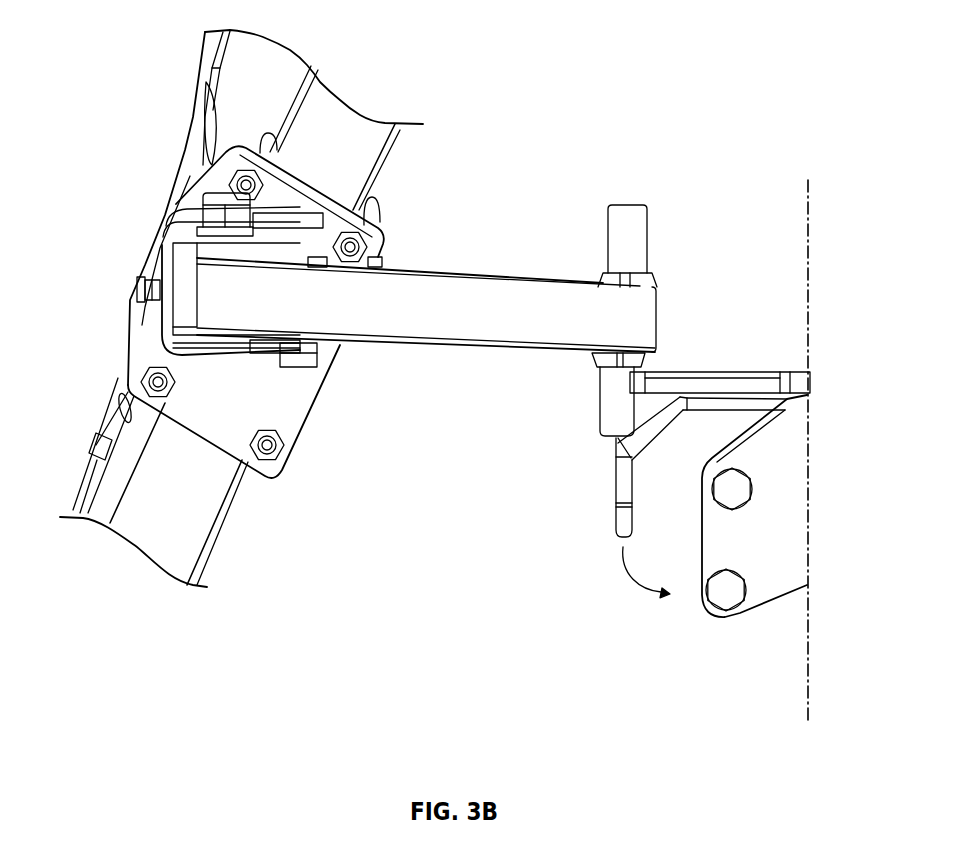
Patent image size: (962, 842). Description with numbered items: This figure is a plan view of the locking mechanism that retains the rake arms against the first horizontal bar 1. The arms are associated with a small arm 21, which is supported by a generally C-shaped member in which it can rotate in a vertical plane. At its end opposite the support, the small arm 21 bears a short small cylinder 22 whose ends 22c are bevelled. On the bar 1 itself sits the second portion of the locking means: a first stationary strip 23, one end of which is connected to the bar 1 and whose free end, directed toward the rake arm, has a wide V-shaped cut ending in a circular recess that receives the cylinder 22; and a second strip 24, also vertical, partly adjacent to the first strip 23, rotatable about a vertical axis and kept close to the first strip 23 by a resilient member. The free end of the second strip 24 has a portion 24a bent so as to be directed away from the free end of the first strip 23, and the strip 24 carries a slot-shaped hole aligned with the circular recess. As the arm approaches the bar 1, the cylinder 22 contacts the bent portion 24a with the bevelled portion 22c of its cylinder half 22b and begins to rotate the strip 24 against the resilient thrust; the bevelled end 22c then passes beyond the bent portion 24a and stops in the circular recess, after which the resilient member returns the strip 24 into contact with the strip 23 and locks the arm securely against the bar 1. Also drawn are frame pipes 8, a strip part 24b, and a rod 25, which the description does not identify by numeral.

The first horizontal bar 1 is at (807, 670).
The frame pipe 8 is at (353, 167).
The small arm 21 is at (455, 287).
The short small cylinder 22 is at (628, 307).
The cylinder half 22b is at (608, 403).
The bevelled end 22c is at (628, 203).
The first stationary strip 23 is at (657, 380).
The second strip 24 is at (668, 462).
The bent portion 24a is at (680, 397).
The second portion of hook bracket 24b is at (720, 403).
The engagement rod 25 is at (620, 493).